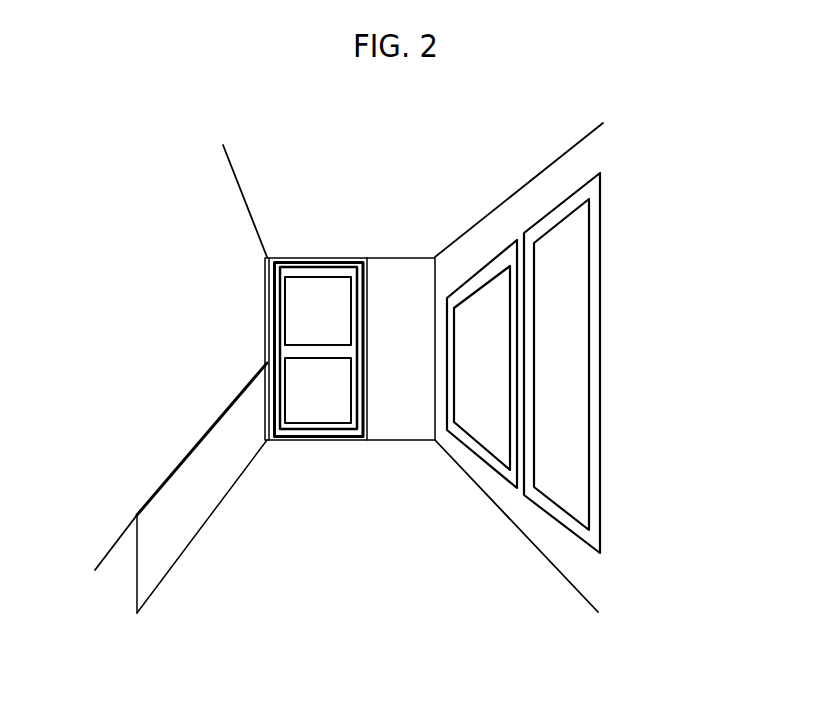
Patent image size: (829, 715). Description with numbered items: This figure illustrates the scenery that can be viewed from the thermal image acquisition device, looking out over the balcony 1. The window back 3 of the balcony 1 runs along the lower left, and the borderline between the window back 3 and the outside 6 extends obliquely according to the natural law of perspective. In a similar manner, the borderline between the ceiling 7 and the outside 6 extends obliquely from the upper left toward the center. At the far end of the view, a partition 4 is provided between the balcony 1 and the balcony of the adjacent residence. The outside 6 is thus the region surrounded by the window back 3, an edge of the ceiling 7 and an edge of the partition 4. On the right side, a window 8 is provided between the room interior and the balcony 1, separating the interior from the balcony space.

The balcony 1 is at (377, 560).
The window back 3 is at (163, 517).
The partition 4 is at (315, 308).
The outside 6 is at (190, 303).
The ceiling 7 is at (287, 202).
The window 8 is at (562, 373).